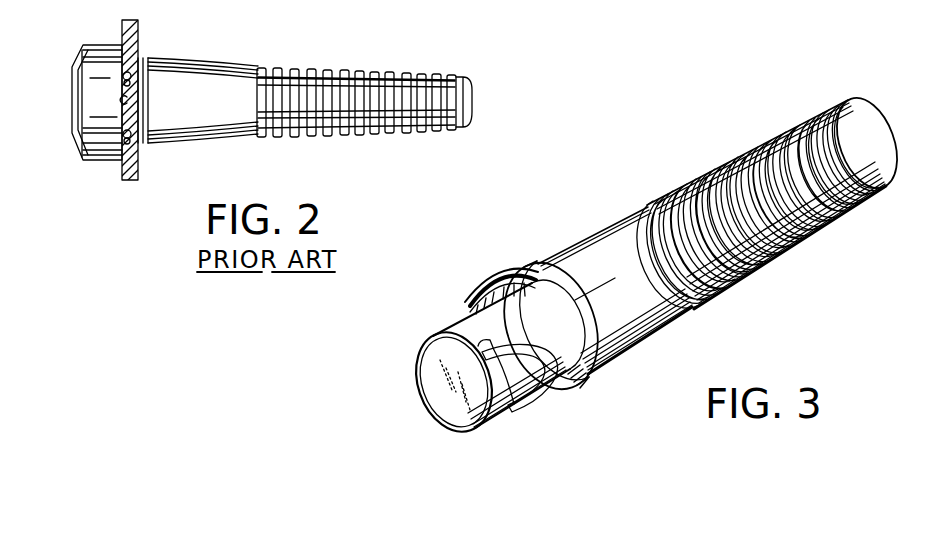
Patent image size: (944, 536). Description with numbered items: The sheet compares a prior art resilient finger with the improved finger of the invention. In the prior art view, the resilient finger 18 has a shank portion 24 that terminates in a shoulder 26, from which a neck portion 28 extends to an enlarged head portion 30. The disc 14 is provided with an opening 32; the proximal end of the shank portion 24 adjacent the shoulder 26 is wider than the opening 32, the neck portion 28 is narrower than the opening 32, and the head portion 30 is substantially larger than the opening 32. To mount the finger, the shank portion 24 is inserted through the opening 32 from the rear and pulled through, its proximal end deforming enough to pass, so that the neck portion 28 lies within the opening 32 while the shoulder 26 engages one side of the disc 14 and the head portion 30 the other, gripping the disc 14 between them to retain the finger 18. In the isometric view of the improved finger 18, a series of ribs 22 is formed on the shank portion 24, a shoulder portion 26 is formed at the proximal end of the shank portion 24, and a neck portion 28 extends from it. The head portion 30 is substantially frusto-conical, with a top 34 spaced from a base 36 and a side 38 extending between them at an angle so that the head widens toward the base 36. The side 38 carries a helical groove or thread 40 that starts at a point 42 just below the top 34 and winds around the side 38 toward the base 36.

In FIG. 2, the disc 14 is at (140, 27).
In FIG. 2, the resilient finger 18 is at (350, 58).
In FIG. 3, the resilient finger 18 is at (686, 148).
In FIG. 2, the ribs 22 is at (425, 72).
In FIG. 3, the ribs 22 is at (796, 135).
In FIG. 2, the shank portion 24 is at (280, 45).
In FIG. 3, the shank portion 24 is at (655, 180).
In FIG. 2, the shoulder 26 is at (133, 100).
In FIG. 3, the shoulder 26 is at (655, 327).
In FIG. 2, the neck portion 28 is at (128, 162).
In FIG. 3, the neck portion 28 is at (598, 392).
In FIG. 2, the head portion 30 is at (70, 68).
In FIG. 3, the head portion 30 is at (400, 338).
In FIG. 2, the opening 32 is at (123, 85).
In FIG. 3, the top 34 is at (430, 366).
In FIG. 3, the base 36 is at (505, 262).
In FIG. 3, the side 38 is at (460, 303).
In FIG. 3, the helical thread 40 is at (507, 422).
In FIG. 3, the point just below top 42 is at (455, 378).